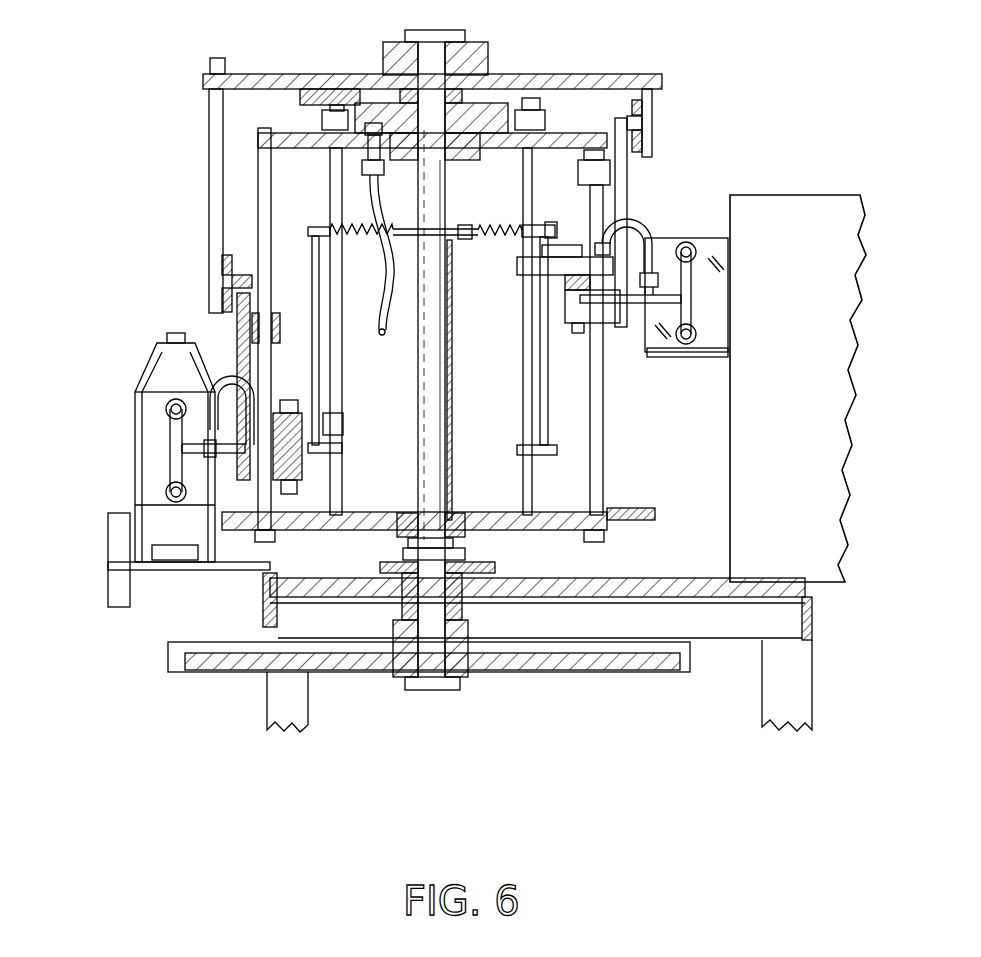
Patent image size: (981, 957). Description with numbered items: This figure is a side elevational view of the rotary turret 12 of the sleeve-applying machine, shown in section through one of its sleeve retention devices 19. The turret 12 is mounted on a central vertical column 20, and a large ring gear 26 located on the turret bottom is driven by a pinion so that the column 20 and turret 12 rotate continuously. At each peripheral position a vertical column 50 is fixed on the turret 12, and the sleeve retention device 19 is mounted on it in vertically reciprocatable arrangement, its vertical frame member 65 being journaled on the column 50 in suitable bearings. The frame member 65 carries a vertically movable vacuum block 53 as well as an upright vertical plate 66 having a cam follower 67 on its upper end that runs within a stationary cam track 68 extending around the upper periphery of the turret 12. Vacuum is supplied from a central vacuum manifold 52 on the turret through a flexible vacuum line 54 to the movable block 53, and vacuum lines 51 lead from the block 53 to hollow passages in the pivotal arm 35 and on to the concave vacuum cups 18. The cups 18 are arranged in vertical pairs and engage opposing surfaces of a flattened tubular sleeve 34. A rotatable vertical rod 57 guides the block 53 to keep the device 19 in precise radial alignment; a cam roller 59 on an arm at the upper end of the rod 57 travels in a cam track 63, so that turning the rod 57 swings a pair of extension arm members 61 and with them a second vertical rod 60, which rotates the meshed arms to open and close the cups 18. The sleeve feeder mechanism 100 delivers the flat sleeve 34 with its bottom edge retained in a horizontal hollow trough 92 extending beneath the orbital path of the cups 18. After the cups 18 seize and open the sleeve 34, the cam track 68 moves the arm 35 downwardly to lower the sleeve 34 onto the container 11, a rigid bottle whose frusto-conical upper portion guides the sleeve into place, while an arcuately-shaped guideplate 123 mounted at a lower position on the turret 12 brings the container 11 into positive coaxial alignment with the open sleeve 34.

The container 11 is at (148, 370).
The rotary turret 12 is at (597, 65).
The vacuum cups 18 is at (687, 242).
The sleeve retention device 19 is at (628, 345).
The central vertical column 20 is at (427, 655).
The ring gear 26 is at (607, 673).
The sleeve 34 is at (725, 262).
The movable arm 35 is at (692, 300).
The vertical column 50 is at (270, 384).
The vacuum line 51 is at (637, 230).
The central vacuum manifold 52 is at (410, 152).
The vacuum block 53 is at (517, 274).
The flexible vacuum line 54 is at (380, 331).
The vertical rod 57 is at (342, 385).
The cam roller 59 is at (336, 97).
The second vertical rod 60 is at (312, 318).
The extension arm members 61 is at (548, 244).
The cam track 63 is at (333, 97).
The vertical frame member 65 is at (238, 322).
The upright vertical plate 66 is at (627, 195).
The cam follower 67 is at (233, 273).
The stationary cam track 68 is at (220, 268).
The horizontal hollow trough 92 is at (722, 357).
The sleeve feeder mechanism 100 is at (832, 348).
The arcuately-shaped guideplate 123 is at (232, 528).